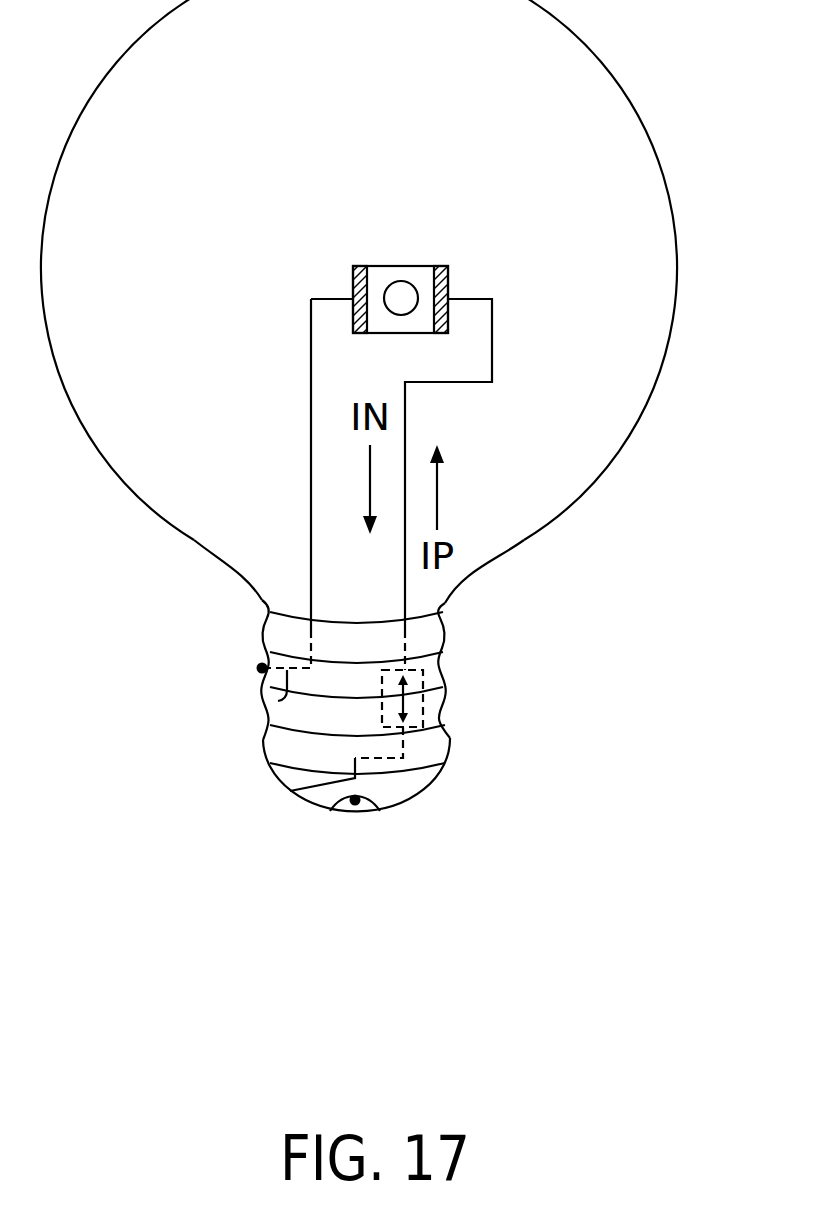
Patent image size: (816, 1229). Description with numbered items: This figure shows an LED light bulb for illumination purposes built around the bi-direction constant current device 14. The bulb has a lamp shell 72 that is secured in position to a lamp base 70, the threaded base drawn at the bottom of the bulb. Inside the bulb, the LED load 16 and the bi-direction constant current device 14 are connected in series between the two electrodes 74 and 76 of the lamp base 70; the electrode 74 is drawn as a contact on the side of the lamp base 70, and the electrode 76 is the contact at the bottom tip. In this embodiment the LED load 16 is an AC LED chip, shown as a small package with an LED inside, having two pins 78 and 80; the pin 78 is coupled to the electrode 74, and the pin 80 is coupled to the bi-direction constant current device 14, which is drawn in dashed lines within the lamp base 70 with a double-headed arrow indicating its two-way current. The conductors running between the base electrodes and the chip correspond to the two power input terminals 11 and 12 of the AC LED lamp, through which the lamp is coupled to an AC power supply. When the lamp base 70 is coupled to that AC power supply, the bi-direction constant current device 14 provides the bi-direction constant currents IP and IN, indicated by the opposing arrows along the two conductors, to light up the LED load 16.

The lamp shell 72 is at (658, 157).
The LED load 16 is at (404, 266).
The pin 78 is at (351, 278).
The pin 80 is at (451, 278).
The lamp base 70 is at (446, 652).
The electrode 74 is at (262, 668).
The power input terminal 12 is at (278, 701).
The bi-direction constant current device 14 is at (423, 707).
The power input terminal 11 is at (290, 791).
The electrode 76 is at (355, 805).